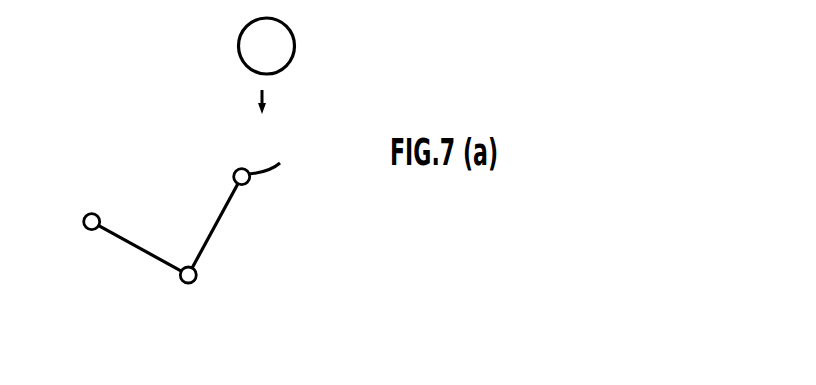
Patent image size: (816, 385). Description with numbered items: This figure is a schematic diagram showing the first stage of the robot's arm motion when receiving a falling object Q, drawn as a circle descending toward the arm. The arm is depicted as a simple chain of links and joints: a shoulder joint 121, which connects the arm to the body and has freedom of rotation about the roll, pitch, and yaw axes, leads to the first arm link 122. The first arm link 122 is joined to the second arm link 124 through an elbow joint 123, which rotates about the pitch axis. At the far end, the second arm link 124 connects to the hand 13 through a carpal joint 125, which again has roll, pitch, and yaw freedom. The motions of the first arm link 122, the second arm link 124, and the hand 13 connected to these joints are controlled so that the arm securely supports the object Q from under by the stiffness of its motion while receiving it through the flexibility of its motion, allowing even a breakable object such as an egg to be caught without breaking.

The falling object Q is at (291, 32).
The hand 13 is at (266, 180).
The shoulder joint 121 is at (85, 216).
The first arm link 122 is at (140, 253).
The elbow joint 123 is at (190, 284).
The second arm link 124 is at (222, 222).
The carpal joint 125 is at (233, 172).